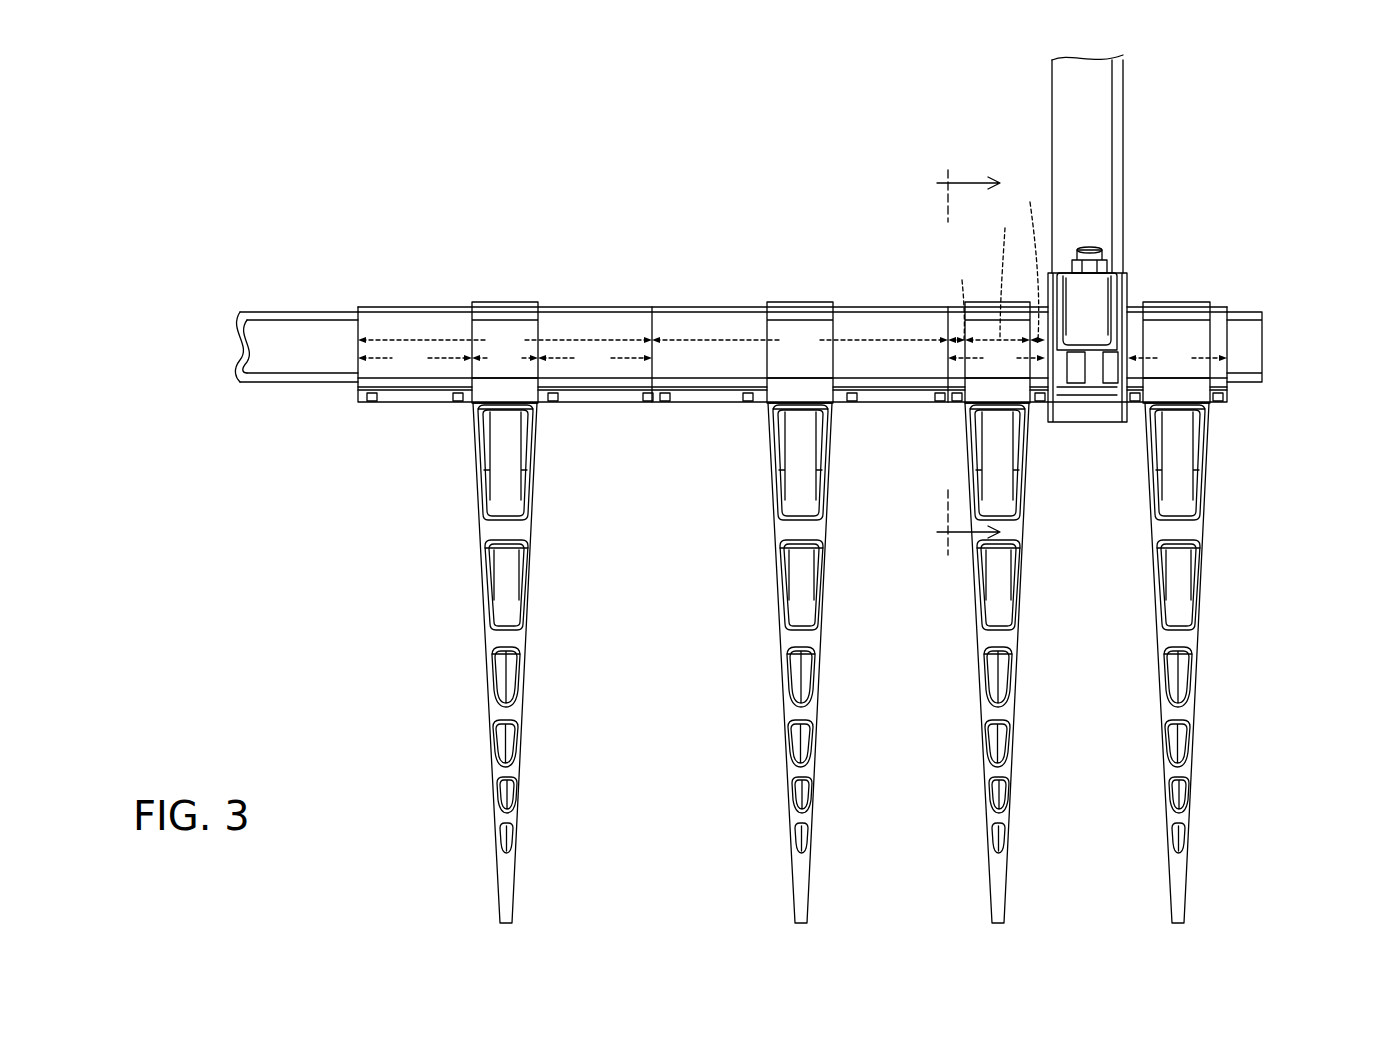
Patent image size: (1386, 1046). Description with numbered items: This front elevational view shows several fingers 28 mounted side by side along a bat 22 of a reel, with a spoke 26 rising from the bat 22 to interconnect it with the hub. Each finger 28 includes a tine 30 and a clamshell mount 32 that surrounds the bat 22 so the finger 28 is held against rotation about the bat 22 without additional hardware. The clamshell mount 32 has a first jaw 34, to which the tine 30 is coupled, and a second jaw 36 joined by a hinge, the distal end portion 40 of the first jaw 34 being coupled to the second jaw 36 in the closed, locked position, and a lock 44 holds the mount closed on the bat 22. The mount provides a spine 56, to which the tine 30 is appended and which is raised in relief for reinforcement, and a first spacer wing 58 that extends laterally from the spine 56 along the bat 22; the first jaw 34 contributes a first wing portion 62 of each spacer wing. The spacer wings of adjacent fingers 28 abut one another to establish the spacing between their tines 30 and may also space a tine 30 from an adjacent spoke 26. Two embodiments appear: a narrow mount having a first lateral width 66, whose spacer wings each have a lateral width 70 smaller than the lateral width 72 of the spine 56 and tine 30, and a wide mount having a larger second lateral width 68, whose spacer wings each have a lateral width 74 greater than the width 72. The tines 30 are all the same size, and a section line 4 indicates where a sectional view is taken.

The section line 4 is at (968, 360).
The bat 22 is at (276, 336).
The spoke 26 is at (1077, 99).
The finger 28 is at (844, 675).
The tine 30 is at (500, 713).
The clamshell mount 32 is at (503, 203).
The first jaw 34 is at (529, 330).
The second jaw 36 is at (494, 302).
The distal end portion 40 is at (437, 400).
The lock 44 is at (416, 432).
The spine 56 is at (483, 400).
The first spacer wing 58 is at (458, 302).
The first wing portion 62 is at (368, 366).
The first lateral width 66 is at (1087, 357).
The second lateral width 68 is at (653, 338).
The spacer wing lateral width 70 is at (995, 259).
The spine lateral width 72 is at (751, 288).
The spacer wing lateral width 74 is at (505, 360).